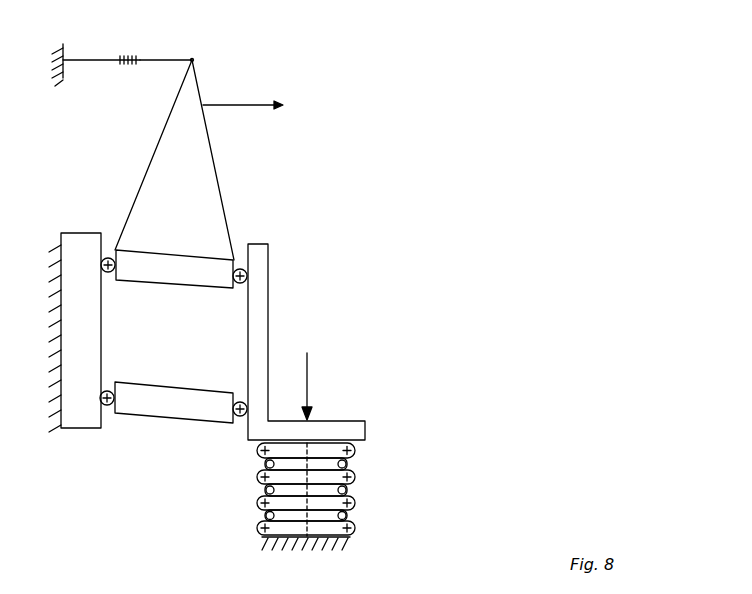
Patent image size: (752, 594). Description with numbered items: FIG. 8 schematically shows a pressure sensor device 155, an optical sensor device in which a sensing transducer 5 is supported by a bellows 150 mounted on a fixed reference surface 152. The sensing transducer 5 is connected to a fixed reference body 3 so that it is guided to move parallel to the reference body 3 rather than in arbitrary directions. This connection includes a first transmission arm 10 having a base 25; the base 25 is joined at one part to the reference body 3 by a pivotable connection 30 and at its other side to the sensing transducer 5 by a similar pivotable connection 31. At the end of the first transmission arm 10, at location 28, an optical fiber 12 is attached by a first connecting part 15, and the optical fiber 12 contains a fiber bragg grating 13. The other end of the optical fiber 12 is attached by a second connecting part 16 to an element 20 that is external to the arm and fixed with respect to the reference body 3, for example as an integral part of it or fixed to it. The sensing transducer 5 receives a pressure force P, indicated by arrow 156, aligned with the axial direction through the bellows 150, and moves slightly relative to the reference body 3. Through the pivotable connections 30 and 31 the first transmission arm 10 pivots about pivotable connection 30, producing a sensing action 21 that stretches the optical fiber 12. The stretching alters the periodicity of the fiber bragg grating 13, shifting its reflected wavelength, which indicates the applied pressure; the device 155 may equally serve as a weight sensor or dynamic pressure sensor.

The reference body 3 is at (75, 430).
The sensing transducer 5 is at (268, 260).
The first transmission arm 10 is at (214, 152).
The optical fiber 12 is at (168, 57).
The fiber bragg grating 13 is at (128, 54).
The first connecting part 15 is at (194, 58).
The second connecting part 16 is at (64, 63).
The element external to the first transmission arm 20 is at (64, 48).
The sensing action 21 is at (267, 102).
The base 25 is at (169, 285).
The location on the first transmission arm 28 is at (197, 64).
The pivotable connection 30 is at (110, 273).
The pivotable connection 31 is at (240, 284).
The bellows 150 is at (355, 474).
The fixed reference surface 152 is at (346, 540).
The pressure sensor device 155 is at (372, 297).
The pressure force P arrow 156 is at (312, 385).